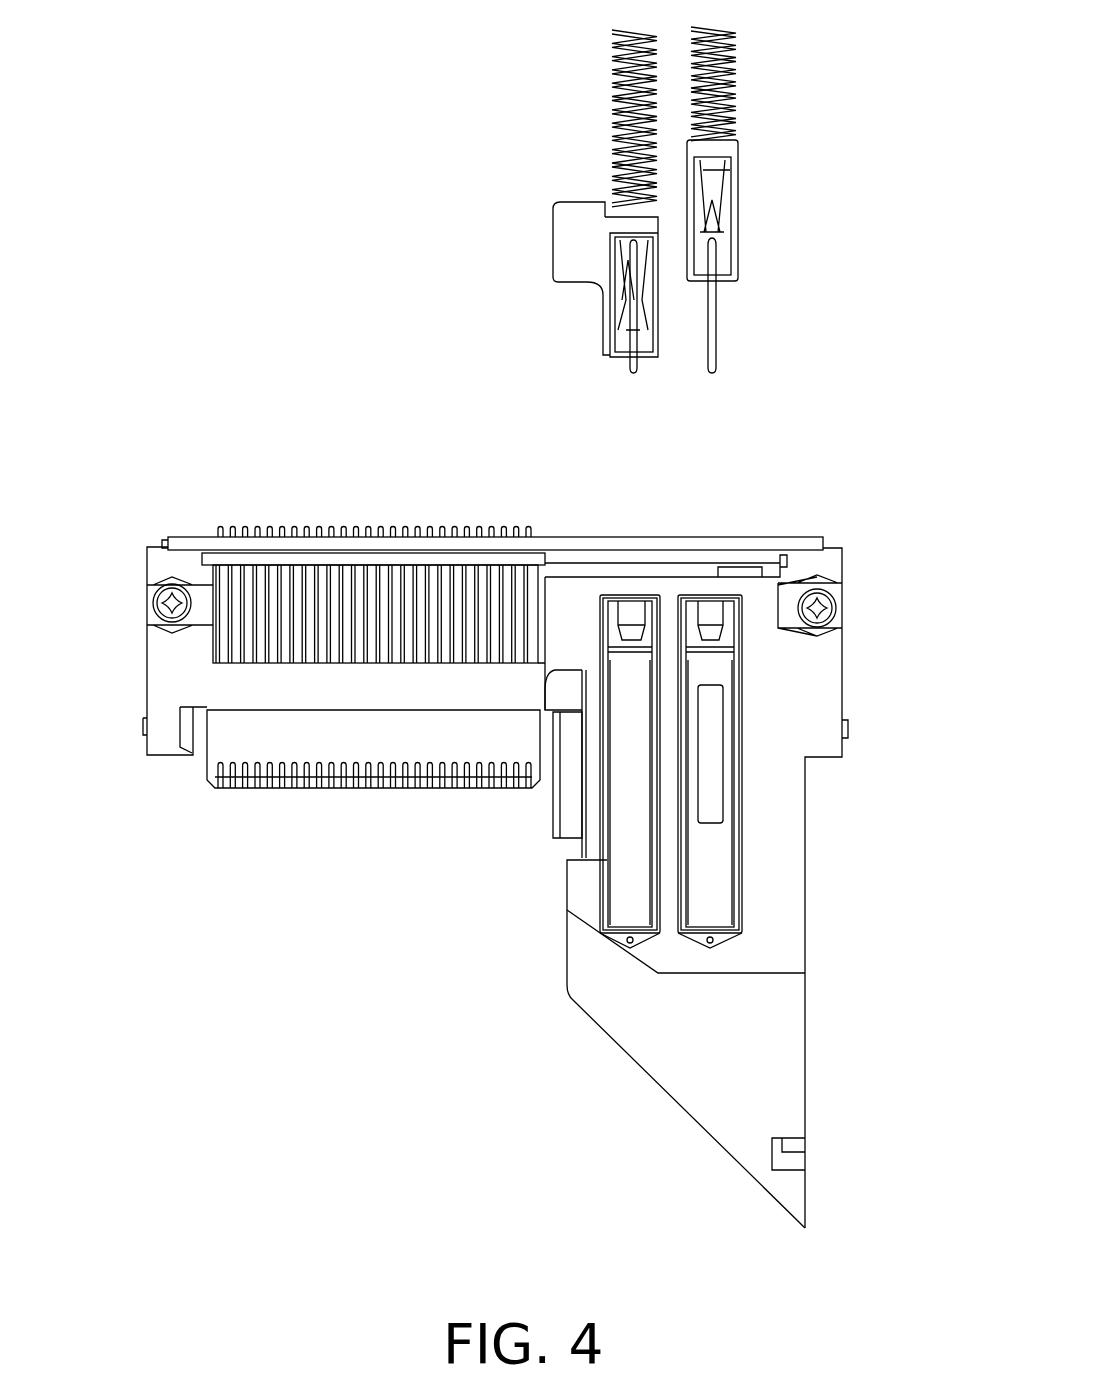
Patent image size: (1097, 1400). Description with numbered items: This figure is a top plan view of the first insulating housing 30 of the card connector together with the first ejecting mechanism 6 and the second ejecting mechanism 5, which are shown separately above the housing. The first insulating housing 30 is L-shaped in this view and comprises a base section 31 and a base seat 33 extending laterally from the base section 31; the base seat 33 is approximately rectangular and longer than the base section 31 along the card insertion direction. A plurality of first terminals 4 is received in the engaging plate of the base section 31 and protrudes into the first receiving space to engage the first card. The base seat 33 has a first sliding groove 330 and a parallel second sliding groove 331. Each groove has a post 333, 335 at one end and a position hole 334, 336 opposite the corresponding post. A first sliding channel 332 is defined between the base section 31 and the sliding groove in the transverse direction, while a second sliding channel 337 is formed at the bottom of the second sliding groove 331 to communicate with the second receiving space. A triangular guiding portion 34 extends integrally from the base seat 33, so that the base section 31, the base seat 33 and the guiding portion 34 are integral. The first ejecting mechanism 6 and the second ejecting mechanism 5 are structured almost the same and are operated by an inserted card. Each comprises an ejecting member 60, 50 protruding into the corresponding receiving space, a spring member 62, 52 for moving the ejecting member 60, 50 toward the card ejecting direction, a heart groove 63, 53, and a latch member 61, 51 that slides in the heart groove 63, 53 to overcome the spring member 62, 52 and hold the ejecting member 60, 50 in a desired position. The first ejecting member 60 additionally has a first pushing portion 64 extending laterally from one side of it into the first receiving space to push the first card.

The first terminals 4 is at (305, 583).
The second ejecting mechanism 5 is at (720, 113).
The first ejecting mechanism 6 is at (608, 160).
The first insulating housing 30 is at (835, 530).
The base section 31 is at (292, 683).
The base seat 33 is at (768, 697).
The guiding portion 34 is at (762, 1065).
The second ejecting member 50 is at (740, 165).
The latch member 51 is at (713, 317).
The spring member 52 is at (700, 33).
The heart groove 53 is at (717, 205).
The first ejecting member 60 is at (657, 268).
The latch member 61 is at (637, 343).
The spring member 62 is at (613, 50).
The heart groove 63 is at (622, 283).
The first pushing portion 64 is at (567, 218).
The first sliding groove 330 is at (625, 793).
The second sliding groove 331 is at (708, 865).
The first sliding channel 332 is at (562, 693).
The post 333 is at (635, 608).
The position hole 334 is at (602, 937).
The post 335 is at (712, 612).
The position hole 336 is at (740, 933).
The second sliding channel 337 is at (710, 767).